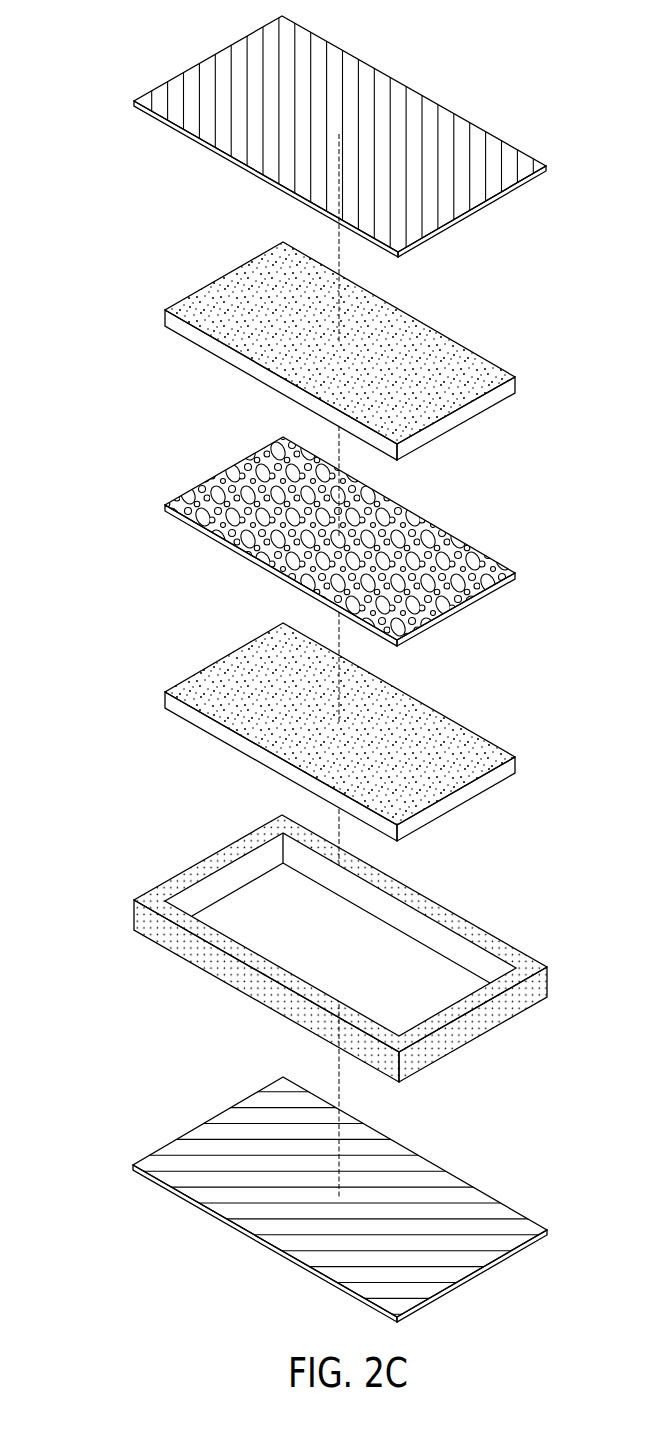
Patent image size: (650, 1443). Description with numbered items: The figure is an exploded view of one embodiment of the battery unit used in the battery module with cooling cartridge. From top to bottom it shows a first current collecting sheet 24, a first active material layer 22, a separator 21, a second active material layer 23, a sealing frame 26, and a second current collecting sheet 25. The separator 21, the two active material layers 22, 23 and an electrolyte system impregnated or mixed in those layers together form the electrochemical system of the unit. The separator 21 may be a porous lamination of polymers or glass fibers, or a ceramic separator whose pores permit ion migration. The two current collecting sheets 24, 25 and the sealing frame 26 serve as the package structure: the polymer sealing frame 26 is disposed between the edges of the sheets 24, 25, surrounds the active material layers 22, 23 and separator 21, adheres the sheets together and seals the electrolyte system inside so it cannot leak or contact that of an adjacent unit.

The current collecting sheet 24 is at (172, 130).
The active material layer 22 is at (185, 336).
The separator 21 is at (177, 518).
The active material layer 23 is at (177, 712).
The sealing frame 26 is at (134, 928).
The current collecting sheet 25 is at (168, 1186).